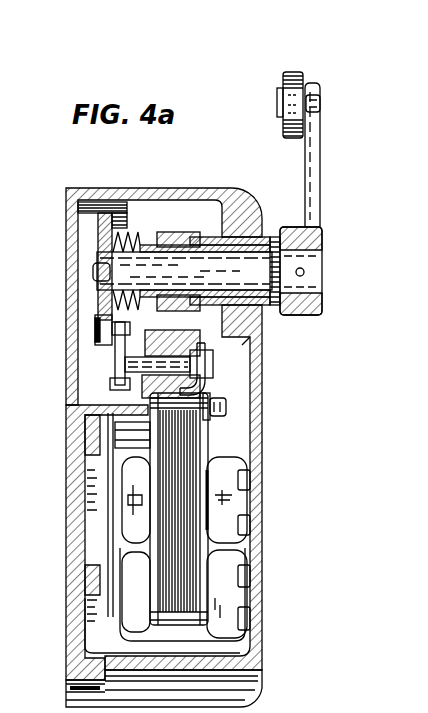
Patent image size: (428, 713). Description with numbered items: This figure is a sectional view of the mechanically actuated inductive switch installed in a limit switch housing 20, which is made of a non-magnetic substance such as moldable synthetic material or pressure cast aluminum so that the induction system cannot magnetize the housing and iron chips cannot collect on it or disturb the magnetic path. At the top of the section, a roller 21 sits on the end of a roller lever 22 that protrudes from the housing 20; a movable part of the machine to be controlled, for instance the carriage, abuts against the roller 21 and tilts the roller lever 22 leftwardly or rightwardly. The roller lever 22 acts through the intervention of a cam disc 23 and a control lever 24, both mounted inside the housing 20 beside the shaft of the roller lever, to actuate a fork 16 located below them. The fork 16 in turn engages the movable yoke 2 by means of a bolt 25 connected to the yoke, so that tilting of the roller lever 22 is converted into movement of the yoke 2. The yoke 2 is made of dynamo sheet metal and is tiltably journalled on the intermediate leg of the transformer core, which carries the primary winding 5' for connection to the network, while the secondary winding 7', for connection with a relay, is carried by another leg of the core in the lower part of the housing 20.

The limit switch housing 20 is at (76, 533).
The roller 21 is at (292, 80).
The roller lever 22 is at (305, 170).
The cam disc 23 is at (100, 233).
The control lever 24 is at (100, 350).
The fork 16 is at (207, 397).
The bolt 25 is at (222, 402).
The movable yoke 2 is at (193, 558).
The primary winding 5' is at (249, 500).
The secondary winding 7' is at (251, 594).